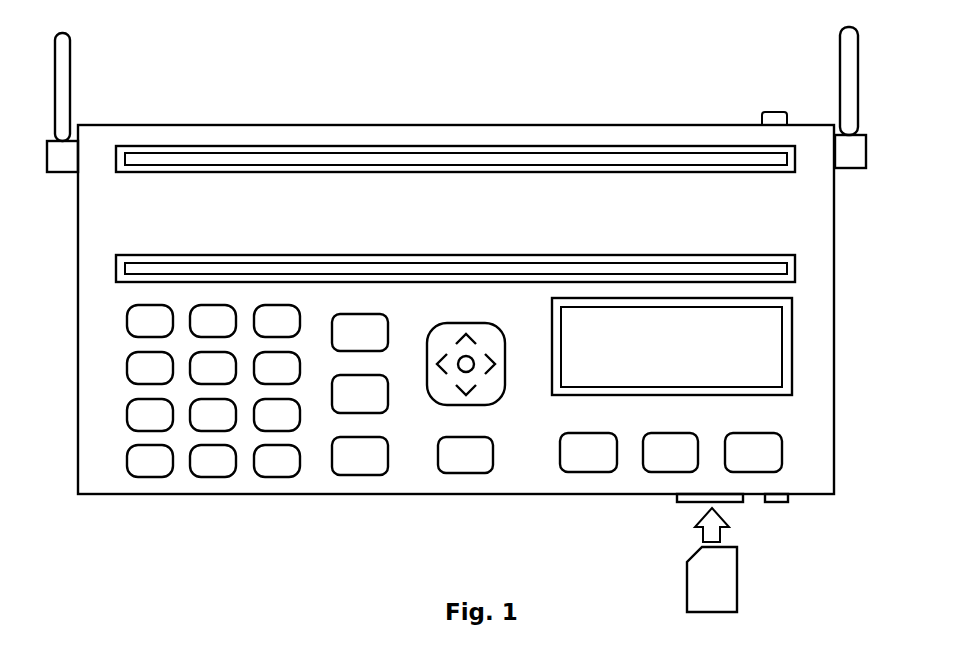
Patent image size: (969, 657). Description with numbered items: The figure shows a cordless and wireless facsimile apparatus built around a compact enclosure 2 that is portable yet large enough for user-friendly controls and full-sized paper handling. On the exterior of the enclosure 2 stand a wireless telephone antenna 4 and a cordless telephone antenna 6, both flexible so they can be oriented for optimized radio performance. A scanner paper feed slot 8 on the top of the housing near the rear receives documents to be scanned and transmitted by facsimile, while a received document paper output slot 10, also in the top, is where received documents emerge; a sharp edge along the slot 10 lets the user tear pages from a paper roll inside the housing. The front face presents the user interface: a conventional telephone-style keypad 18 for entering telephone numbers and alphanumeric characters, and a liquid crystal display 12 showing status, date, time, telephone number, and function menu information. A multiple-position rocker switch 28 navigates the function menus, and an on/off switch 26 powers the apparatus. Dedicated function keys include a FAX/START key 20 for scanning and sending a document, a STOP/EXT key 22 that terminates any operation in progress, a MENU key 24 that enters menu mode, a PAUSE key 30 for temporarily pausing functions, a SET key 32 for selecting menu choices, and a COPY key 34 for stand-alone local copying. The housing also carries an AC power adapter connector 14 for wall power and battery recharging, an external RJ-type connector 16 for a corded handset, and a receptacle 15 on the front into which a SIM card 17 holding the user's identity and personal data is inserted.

The enclosure 2 is at (231, 124).
The wireless telephone antenna 4 is at (70, 63).
The cordless telephone antenna 6 is at (840, 48).
The scanner paper feed slot 8 is at (333, 172).
The received document paper output slot 10 is at (596, 254).
The liquid crystal display 12 is at (794, 312).
The AC power adapter connector 14 is at (760, 112).
The receptacle 15 is at (677, 500).
The external RJ-type connector 16 is at (788, 500).
The SIM card 17 is at (687, 595).
The telephone-style keypad 18 is at (302, 498).
The FAX/START key 20 is at (388, 317).
The STOP/EXT key 22 is at (388, 380).
The MENU key 24 is at (388, 442).
The on/off switch 26 is at (493, 441).
The multiple-position rocker switch 28 is at (500, 324).
The PAUSE key 30 is at (614, 436).
The SET key 32 is at (698, 436).
The COPY key 34 is at (782, 436).